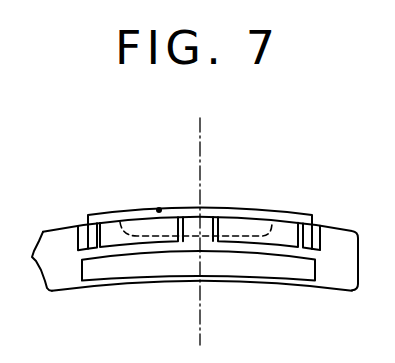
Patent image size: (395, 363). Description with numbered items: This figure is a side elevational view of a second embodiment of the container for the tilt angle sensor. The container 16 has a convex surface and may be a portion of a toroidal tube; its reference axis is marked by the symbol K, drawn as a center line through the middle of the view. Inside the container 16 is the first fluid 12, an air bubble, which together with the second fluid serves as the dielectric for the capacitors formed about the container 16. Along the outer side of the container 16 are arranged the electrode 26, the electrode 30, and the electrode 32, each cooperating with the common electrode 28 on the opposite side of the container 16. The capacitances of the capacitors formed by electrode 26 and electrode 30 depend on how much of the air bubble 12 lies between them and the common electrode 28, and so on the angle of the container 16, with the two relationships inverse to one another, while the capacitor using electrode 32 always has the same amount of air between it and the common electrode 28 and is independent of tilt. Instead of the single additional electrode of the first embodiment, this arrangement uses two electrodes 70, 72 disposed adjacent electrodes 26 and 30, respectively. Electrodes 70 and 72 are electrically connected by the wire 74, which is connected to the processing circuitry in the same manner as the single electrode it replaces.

The container 16 is at (330, 267).
The common electrode 28 is at (138, 263).
The electrode 30 is at (112, 224).
The electrode 72 is at (83, 229).
The electrode 70 is at (317, 232).
The electrode 32 is at (207, 218).
The electrode 26 is at (286, 235).
The first fluid 12 is at (254, 218).
The wire 74 is at (159, 208).
The reference axis K is at (203, 140).